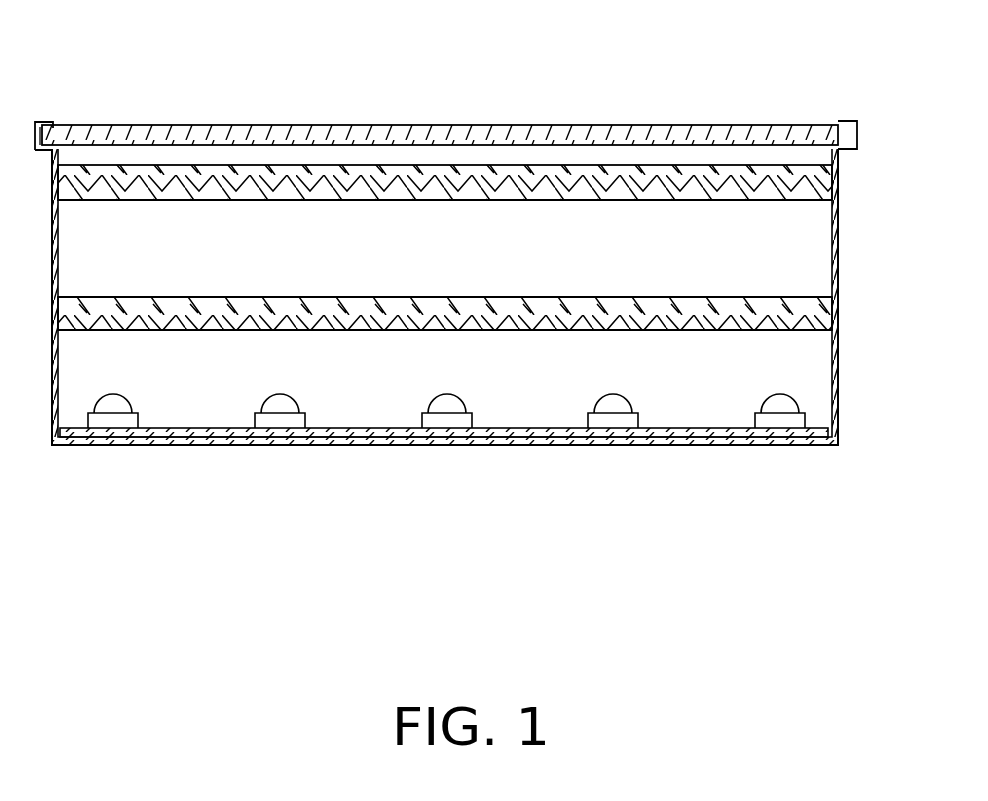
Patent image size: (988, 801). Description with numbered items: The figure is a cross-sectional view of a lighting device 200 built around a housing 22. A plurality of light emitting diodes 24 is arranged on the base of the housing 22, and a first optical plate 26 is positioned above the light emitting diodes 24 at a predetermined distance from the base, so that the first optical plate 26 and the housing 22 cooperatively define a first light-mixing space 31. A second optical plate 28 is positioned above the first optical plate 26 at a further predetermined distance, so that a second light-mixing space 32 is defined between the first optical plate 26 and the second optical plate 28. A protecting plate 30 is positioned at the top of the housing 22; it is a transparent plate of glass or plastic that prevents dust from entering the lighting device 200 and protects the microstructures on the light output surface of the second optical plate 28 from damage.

The lighting device 200 is at (293, 64).
The housing 22 is at (837, 402).
The light emitting diodes 24 is at (795, 424).
The first optical plate 26 is at (822, 320).
The second optical plate 28 is at (824, 187).
The protecting plate 30 is at (751, 130).
The first light-mixing space 31 is at (800, 382).
The second light-mixing space 32 is at (812, 250).